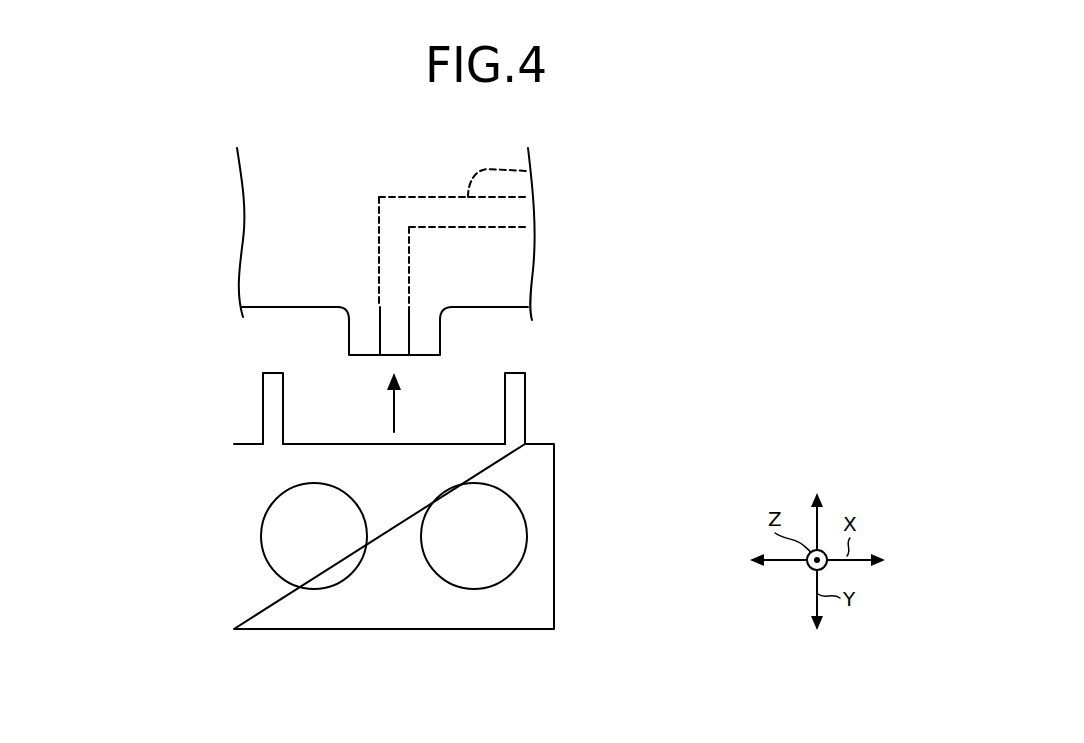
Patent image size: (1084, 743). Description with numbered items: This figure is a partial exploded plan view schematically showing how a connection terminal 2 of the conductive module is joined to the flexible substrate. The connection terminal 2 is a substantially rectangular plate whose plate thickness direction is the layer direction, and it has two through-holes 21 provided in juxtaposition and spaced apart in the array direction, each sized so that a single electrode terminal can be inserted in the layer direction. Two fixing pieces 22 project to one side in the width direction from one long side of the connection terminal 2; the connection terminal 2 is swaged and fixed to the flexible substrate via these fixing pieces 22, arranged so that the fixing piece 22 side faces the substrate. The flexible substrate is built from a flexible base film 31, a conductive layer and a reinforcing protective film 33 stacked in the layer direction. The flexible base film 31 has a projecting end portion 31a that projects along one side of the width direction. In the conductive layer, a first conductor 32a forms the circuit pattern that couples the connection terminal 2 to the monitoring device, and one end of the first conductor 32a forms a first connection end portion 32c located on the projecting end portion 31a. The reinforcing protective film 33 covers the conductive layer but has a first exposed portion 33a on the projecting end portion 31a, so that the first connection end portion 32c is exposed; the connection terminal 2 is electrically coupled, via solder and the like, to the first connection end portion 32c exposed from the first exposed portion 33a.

The connection terminal 2 is at (570, 550).
The through-hole 21 is at (317, 484).
The fixing piece 22 is at (273, 407).
The flexible base film 31 is at (330, 320).
The projecting end portion 31a is at (425, 340).
The first conductor 32a is at (528, 171).
The first connection end portion 32c is at (394, 340).
The reinforcing protective film 33 is at (262, 250).
The first exposed portion 33a is at (428, 308).